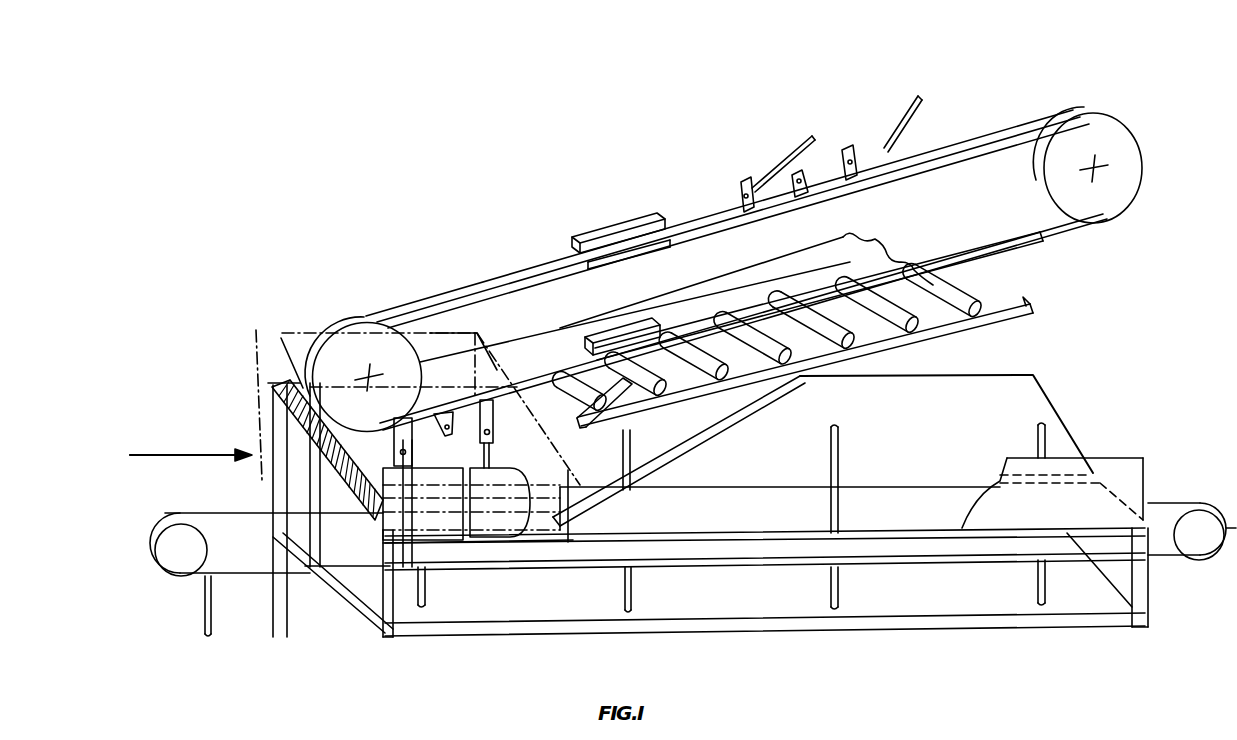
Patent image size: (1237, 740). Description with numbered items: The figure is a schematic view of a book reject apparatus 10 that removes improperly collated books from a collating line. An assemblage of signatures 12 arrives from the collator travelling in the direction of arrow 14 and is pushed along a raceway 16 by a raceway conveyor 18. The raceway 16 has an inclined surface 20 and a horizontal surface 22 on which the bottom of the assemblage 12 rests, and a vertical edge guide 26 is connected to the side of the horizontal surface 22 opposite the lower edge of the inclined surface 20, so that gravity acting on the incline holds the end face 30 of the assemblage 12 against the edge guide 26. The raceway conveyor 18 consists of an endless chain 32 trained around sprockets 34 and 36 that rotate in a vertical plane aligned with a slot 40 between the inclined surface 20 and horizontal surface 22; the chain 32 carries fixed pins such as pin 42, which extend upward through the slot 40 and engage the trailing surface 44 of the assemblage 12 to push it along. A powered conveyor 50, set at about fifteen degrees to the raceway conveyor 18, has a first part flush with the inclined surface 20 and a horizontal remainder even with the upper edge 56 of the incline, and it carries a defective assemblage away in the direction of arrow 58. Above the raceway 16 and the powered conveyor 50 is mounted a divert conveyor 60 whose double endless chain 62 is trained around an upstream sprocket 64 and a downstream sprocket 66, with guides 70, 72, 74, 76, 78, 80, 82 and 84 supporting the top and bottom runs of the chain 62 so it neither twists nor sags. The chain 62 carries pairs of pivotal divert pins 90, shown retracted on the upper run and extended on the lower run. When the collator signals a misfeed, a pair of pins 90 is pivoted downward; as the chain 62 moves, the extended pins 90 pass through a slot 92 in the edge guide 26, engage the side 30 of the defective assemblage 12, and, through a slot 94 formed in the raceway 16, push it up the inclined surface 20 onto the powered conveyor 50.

The book reject apparatus 10 is at (547, 158).
The assemblage of signatures 12 is at (275, 353).
The arrow indicating direction of travel 14 is at (208, 452).
The raceway 16 is at (1082, 410).
The raceway conveyor 18 is at (152, 576).
The inclined surface 20 is at (918, 436).
The horizontal surface 22 is at (898, 523).
The vertical edge guide 26 is at (1150, 475).
The end face of the assemblage 30 is at (553, 470).
The endless chain 32 is at (307, 568).
The sprocket 34 is at (1202, 540).
The sprocket 36 is at (178, 566).
The slot 40 is at (925, 478).
The pin 42 is at (330, 503).
The trailing or rear surface of the assemblage 44 is at (262, 445).
The powered conveyor 50 is at (988, 300).
The upper edge of the inclined surface 56 is at (1015, 372).
The arrow indicating direction of removal 58 is at (988, 273).
The divert conveyor 60 is at (1042, 106).
The double endless chain 62 is at (447, 274).
The sprocket 64 is at (340, 326).
The sprocket 66 is at (1118, 194).
The guide 70 is at (618, 212).
The guide 72 is at (613, 232).
The guide 74 is at (664, 254).
The guide 76 is at (662, 264).
The guide 78 is at (606, 320).
The guide 80 is at (618, 340).
The guide 82 is at (579, 403).
The guide 84 is at (594, 386).
The divert pin 90 is at (890, 104).
The slot in the edge guide 92 is at (480, 504).
The slot in the raceway 94 is at (714, 447).